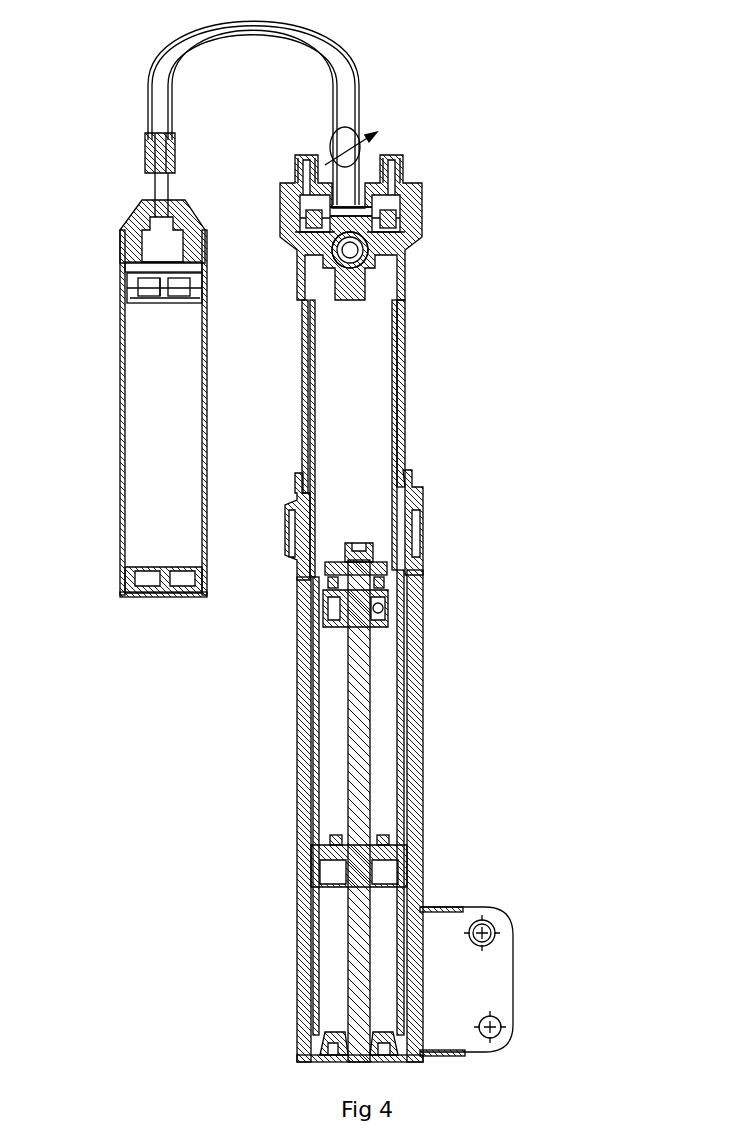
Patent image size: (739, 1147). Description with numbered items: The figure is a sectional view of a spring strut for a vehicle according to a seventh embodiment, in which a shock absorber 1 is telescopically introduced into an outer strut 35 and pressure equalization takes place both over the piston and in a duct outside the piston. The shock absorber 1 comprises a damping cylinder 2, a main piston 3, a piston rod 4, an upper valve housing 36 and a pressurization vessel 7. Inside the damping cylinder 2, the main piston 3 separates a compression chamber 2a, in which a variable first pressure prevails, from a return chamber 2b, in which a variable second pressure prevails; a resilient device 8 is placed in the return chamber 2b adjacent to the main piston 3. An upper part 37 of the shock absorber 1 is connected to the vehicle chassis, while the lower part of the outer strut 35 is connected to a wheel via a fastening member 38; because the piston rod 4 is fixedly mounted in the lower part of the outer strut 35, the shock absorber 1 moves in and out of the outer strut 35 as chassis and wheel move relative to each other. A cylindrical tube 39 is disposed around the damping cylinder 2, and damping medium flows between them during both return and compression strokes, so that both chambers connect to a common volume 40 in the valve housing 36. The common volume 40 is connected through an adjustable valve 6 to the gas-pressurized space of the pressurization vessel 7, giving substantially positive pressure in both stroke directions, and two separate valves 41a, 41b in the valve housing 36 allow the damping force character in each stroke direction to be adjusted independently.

The shock absorber 1 is at (455, 593).
The damping cylinder 2 is at (405, 373).
The compression chamber 2a is at (357, 407).
The return chamber 2b is at (379, 755).
The main piston 3 is at (378, 572).
The piston rod 4 is at (362, 713).
The adjustable valve 6 is at (372, 143).
The pressurizing vessel 7 is at (122, 317).
The resilient device 8 is at (387, 610).
The outer strut 35 is at (422, 674).
The upper valve housing 36 is at (420, 200).
The upper part 37 is at (353, 251).
The fastening member 38 is at (492, 963).
The cylindrical tube 39 is at (405, 440).
The common volume 40 is at (347, 214).
The valve 41a is at (403, 158).
The valve 41b is at (408, 168).